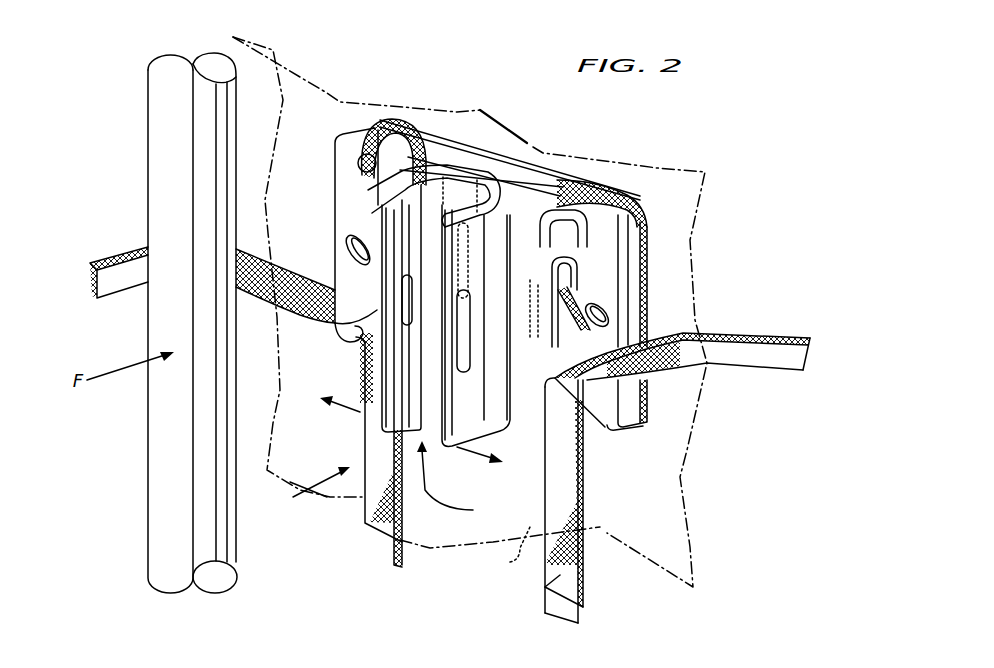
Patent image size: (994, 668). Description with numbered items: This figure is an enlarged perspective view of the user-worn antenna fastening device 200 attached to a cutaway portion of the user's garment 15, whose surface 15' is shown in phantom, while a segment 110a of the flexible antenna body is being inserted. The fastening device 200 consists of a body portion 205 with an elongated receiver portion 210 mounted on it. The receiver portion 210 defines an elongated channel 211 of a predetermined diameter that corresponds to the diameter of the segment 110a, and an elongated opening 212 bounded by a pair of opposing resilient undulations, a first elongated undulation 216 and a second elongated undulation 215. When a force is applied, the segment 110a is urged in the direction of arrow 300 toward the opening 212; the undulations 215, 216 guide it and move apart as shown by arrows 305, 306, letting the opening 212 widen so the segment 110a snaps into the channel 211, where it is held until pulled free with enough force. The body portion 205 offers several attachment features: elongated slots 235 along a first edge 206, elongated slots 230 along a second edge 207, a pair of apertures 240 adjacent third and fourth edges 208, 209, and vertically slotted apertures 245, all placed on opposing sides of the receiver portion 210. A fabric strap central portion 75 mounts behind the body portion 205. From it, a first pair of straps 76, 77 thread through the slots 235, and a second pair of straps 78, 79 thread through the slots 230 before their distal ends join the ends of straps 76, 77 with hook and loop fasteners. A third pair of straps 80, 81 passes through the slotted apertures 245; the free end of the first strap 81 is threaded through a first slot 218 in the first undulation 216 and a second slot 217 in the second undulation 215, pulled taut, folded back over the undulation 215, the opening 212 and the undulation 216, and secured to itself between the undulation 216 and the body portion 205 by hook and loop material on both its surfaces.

The garment 15 is at (504, 312).
The surface of garment 15' is at (494, 549).
The strap central portion 75 is at (703, 222).
The first strap of first pair of straps 76 is at (399, 140).
The second strap of first pair of straps 77 is at (625, 183).
The first strap of second pair of straps 78 is at (360, 512).
The second strap of second pair of straps 79 is at (540, 577).
The second strap of third pair of straps 80 is at (92, 282).
The first strap of third pair of straps 81 is at (810, 362).
The segment of flexible antenna body portion 110a is at (150, 212).
The user-worn antenna fastening device 200 is at (650, 280).
The body portion 205 is at (640, 400).
The first edge of body portion 206 is at (540, 197).
The second edge of body portion 207 is at (498, 426).
The third edge of body portion 208 is at (360, 165).
The fourth edge of body portion 209 is at (650, 242).
The elongated receiver portion 210 is at (490, 113).
The elongated channel 211 is at (465, 195).
The elongated opening 212 is at (462, 481).
The second elongated undulation 215 is at (353, 212).
The first elongated undulation 216 is at (495, 232).
The second slot 217 is at (363, 365).
The first slot 218 is at (470, 347).
The elongated slots 230 is at (345, 338).
The elongated slots 235 is at (233, 37).
The apertures 240 is at (343, 250).
The elongated slots 245 is at (613, 308).
The arrow 300 is at (303, 497).
The arrow 305 is at (348, 412).
The arrow 306 is at (463, 462).